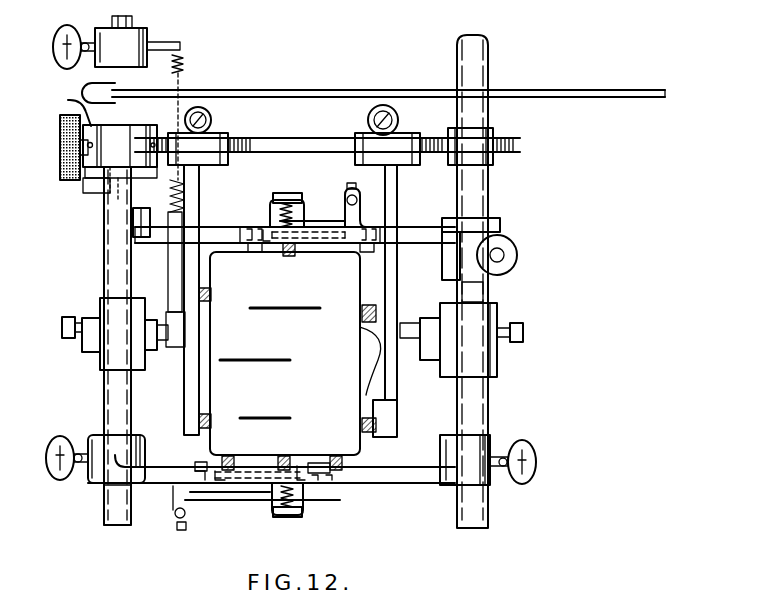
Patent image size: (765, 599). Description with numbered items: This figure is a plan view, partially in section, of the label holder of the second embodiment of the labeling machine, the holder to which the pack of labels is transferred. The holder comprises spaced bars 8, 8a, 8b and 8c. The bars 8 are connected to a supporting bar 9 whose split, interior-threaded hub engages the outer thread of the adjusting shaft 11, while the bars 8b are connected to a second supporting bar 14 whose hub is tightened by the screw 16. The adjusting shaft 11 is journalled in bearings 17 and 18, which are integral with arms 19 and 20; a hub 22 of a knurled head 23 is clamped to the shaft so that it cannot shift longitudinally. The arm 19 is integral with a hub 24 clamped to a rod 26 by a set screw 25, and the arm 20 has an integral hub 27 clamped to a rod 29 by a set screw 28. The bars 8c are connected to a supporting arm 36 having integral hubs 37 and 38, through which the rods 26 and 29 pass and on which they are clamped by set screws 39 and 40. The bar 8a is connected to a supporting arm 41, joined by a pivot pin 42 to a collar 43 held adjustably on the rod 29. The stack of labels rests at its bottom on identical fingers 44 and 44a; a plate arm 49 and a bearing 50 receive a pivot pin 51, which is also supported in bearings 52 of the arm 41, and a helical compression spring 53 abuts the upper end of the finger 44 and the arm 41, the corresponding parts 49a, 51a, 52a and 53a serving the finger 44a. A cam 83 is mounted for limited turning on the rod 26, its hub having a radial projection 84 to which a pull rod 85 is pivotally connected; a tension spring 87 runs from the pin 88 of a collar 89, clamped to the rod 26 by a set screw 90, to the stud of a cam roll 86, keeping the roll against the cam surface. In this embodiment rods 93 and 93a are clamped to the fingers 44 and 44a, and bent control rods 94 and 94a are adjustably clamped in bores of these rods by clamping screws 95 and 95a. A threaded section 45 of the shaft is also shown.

The bars 8 is at (211, 294).
The rod 8a is at (283, 250).
The bars 8b is at (362, 312).
The arms 8c is at (229, 456).
The supporting bar 9 is at (184, 368).
The adjusting shaft 11 is at (279, 138).
The second supporting bar 14 is at (397, 384).
The screw 16 is at (395, 120).
The bearing 17 is at (145, 125).
The bearing 18 is at (493, 132).
The arm 19 is at (117, 233).
The arm 20 is at (479, 294).
The hub 22 is at (68, 101).
The knurled head 23 is at (60, 122).
The hub 24 is at (100, 301).
The set screw 25 is at (68, 317).
The rod 26 is at (112, 19).
The hub 27 is at (497, 318).
The set screw 28 is at (523, 330).
The rod 29 is at (488, 61).
The supporting arm 36 is at (162, 483).
The hub 37 is at (138, 437).
The hub 38 is at (487, 437).
The set screw 39 is at (50, 451).
The set screw 40 is at (529, 451).
The supporting arm 41 is at (207, 233).
The pivot pin 42 is at (504, 255).
The collar 43 is at (500, 225).
The finger 44 is at (275, 198).
The finger 44a is at (285, 518).
The threaded section 45 is at (418, 138).
The arm 49 is at (263, 255).
The arm 49a is at (300, 465).
The bearing 50 is at (349, 245).
The pivot pin 51 is at (322, 241).
The pivot pin 51a is at (253, 470).
The bearings 52 is at (250, 252).
The bearings 52a is at (200, 462).
The helical compression spring 53 is at (270, 211).
The spring 53a is at (304, 500).
The cam 83 is at (93, 193).
The radial projection 84 is at (92, 86).
The pull rod 85 is at (168, 90).
The cam roll 86 is at (144, 237).
The tension spring 87 is at (185, 62).
The pin 88 is at (168, 42).
The collar 89 is at (147, 37).
The set screw 90 is at (66, 33).
The rod 93 is at (313, 220).
The rod 93a is at (230, 506).
The control rod 94 is at (360, 196).
The control rod 94a is at (175, 515).
The clamping screw 95 is at (349, 183).
The clamping screw 95a is at (181, 530).